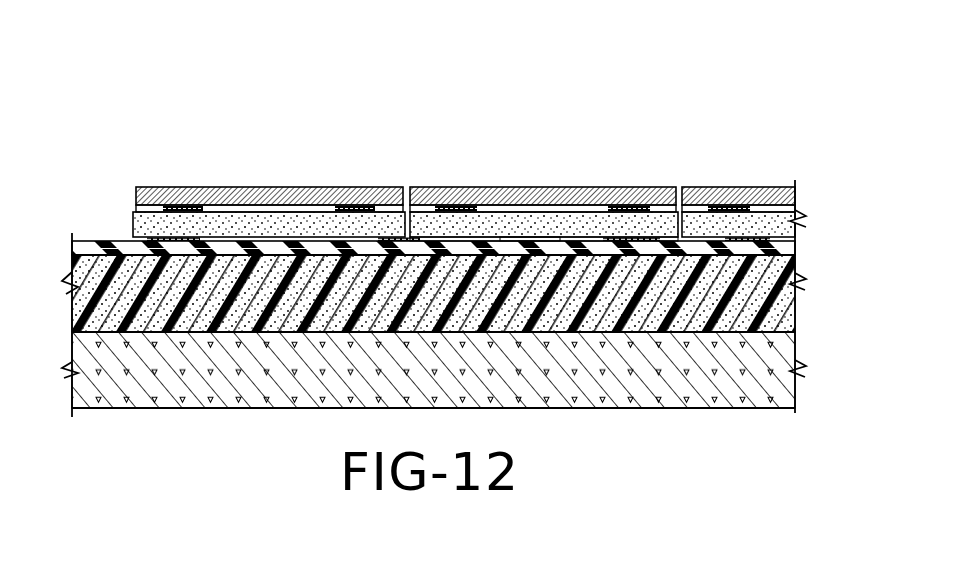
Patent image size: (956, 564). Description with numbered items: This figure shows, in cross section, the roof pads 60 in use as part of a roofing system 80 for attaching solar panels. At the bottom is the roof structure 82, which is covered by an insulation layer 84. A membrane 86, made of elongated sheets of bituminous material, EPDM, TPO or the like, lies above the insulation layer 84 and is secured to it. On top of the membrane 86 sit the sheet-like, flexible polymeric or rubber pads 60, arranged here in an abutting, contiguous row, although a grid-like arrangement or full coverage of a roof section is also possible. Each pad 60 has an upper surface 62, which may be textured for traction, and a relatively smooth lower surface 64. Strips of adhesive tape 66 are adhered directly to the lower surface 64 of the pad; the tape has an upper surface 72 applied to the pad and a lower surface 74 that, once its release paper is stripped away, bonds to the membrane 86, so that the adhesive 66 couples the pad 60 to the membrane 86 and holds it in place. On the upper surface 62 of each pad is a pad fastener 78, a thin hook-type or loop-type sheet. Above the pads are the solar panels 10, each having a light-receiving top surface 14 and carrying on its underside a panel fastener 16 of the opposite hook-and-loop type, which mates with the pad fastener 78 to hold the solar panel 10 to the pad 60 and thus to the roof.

The solar panel 10 is at (441, 154).
The top surface 14 is at (283, 190).
The panel fastener 16 is at (190, 203).
The roof pad 60 is at (127, 216).
The upper surface 62 is at (560, 210).
The lower surface 64 is at (523, 238).
The adhesive tape 66 is at (197, 240).
The upper surface of adhesive tape 72 is at (655, 240).
The lower surface of adhesive tape 74 is at (618, 238).
The pad fastener 78 is at (190, 203).
The roofing system 80 is at (441, 125).
The roof structure 82 is at (804, 382).
The insulation layer 84 is at (62, 281).
The membrane 86 is at (108, 236).